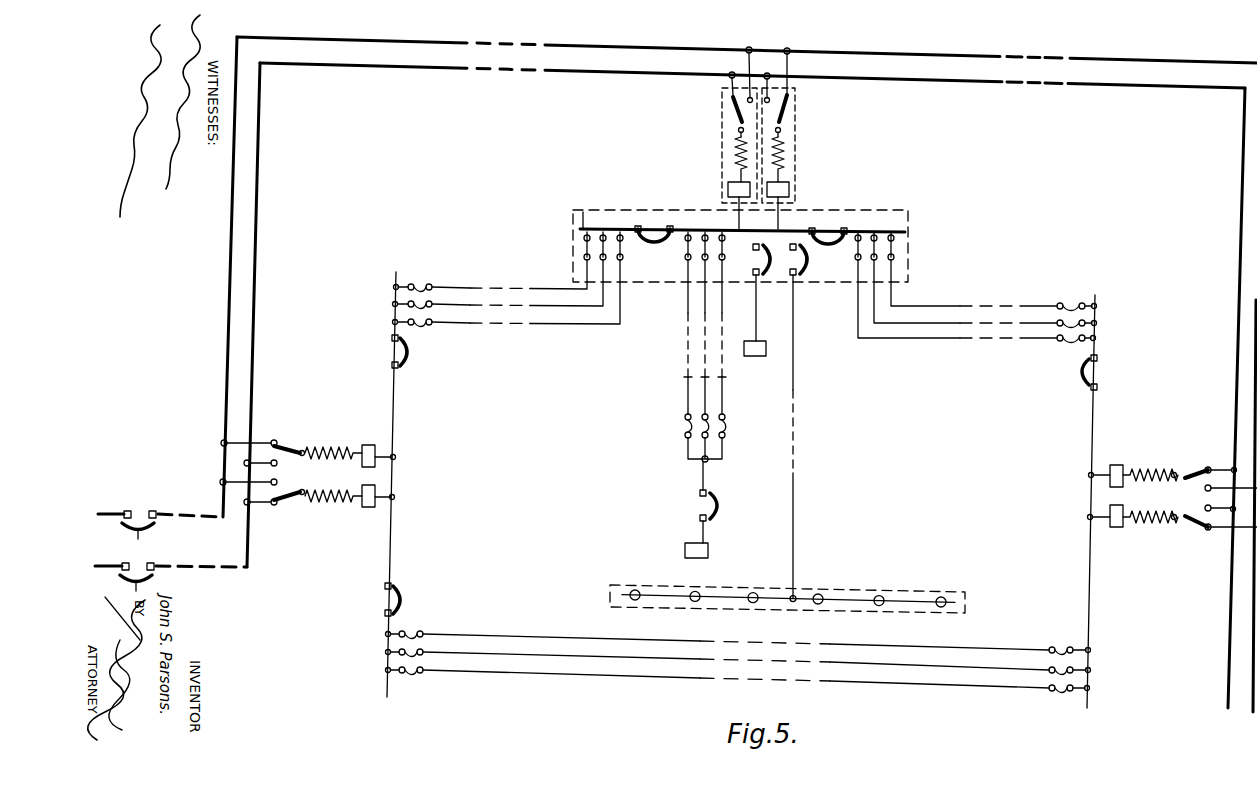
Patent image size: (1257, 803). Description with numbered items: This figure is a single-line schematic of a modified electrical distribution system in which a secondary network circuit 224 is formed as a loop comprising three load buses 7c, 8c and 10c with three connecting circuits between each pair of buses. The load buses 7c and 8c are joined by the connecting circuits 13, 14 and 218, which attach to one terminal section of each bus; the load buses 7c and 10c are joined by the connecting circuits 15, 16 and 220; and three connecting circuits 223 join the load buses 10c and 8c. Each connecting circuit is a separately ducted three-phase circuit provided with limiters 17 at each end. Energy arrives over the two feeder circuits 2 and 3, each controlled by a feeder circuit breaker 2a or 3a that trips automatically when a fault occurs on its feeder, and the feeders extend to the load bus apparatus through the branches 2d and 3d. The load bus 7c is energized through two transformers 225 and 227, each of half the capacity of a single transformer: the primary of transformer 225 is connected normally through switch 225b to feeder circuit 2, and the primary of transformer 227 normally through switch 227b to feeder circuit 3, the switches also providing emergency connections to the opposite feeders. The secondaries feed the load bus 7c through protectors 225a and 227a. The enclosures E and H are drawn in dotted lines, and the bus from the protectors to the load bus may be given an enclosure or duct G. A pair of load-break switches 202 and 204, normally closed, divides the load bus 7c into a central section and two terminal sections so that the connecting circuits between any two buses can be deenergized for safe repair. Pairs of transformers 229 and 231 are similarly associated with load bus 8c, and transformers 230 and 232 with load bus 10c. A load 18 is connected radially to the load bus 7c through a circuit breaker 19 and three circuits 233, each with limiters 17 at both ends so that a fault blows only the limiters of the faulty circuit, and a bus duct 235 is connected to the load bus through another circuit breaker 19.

The feeder circuit 3 is at (412, 40).
The feeder circuit 2 is at (408, 65).
The conductor branch 2d is at (772, 72).
The conductor branch 3d is at (746, 88).
The enclosure H is at (722, 130).
The switch 225b is at (733, 108).
The switch 227b is at (800, 107).
The transformer 225 is at (730, 152).
The transformer 227 is at (796, 153).
The protector 225a is at (728, 190).
The protector 227a is at (790, 190).
The enclosure E is at (908, 245).
The load bus 7c is at (582, 214).
The load-break switch 202 is at (660, 207).
The load-break switch 204 is at (832, 230).
The enclosure or duct G is at (790, 210).
The limiters 17 is at (686, 252).
The circuit breaker 19 is at (806, 262).
The load bus 10c is at (392, 552).
The load bus 8c is at (1087, 600).
The connecting circuit 15 is at (531, 280).
The connecting circuit 16 is at (545, 300).
The connecting circuit 220 is at (561, 319).
The connecting circuit 218 is at (1045, 295).
The connecting circuit 14 is at (960, 315).
The connecting circuit 13 is at (935, 332).
The circuits 233 is at (729, 381).
The load 18 is at (757, 342).
The bus duct 235 is at (622, 583).
The connecting circuits 223 is at (532, 630).
The transformer 232 is at (340, 441).
The transformer 230 is at (340, 506).
The transformer 229 is at (1160, 468).
The transformer 231 is at (1162, 535).
The secondary network circuit 224 is at (1040, 553).
The feeder circuit breaker 3a is at (150, 533).
The feeder circuit breaker 2a is at (150, 585).